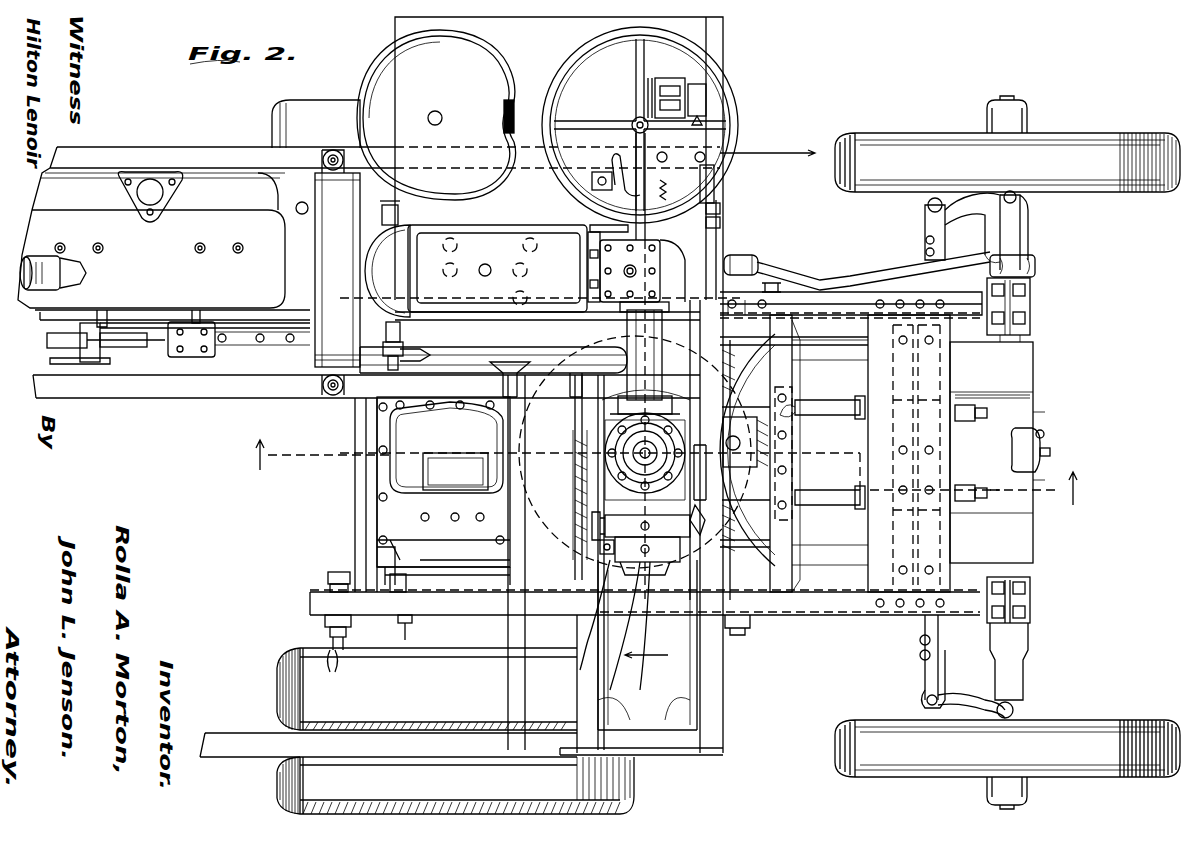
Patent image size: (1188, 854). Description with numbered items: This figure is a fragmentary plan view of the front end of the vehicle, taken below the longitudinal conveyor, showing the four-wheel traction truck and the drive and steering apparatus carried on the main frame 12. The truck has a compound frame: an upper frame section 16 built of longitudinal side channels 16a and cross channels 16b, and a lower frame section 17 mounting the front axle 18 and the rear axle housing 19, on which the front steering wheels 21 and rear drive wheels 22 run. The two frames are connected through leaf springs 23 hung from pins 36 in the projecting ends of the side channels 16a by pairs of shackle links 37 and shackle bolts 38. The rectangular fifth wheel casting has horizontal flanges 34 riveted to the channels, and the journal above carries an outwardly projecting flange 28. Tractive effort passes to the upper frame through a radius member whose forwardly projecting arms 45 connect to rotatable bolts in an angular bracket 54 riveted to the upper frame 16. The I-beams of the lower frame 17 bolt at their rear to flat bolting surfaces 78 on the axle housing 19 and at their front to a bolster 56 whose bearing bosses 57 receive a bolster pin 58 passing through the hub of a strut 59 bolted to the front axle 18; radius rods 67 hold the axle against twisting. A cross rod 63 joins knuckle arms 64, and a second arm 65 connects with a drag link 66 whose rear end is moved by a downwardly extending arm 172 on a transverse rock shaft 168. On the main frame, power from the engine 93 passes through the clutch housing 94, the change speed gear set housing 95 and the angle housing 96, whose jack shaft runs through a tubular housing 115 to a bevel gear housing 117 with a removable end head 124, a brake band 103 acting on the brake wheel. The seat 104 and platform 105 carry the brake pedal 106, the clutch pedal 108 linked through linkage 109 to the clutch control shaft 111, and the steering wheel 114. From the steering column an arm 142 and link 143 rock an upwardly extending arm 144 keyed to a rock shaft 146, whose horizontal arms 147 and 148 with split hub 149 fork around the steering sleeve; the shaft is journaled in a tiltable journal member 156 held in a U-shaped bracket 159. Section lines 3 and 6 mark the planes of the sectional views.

The section line 3- 3 is at (663, 472).
The section line 6- 6 is at (720, 404).
The main frame 12 is at (143, 400).
The upper frame section 16 is at (300, 593).
The side channels 16a is at (812, 640).
The cross channels 16b is at (360, 490).
The lower frame section 17 is at (382, 551).
The front axle 18 is at (1020, 279).
The rear axle housing 19 is at (447, 640).
The front wheels 21 is at (1153, 190).
The rear wheels 22 is at (300, 727).
The leaf springs 23 is at (797, 292).
The flange 28 is at (743, 387).
The horizontal flanges 34 is at (742, 627).
The pins or bolts 36 is at (333, 643).
The shackle links 37 is at (336, 580).
The shackle bolts 38 is at (325, 647).
The forwardly projecting arms 45 is at (837, 413).
The angular bracket 54 is at (845, 487).
The front bolster 56 is at (1024, 400).
The bearing bosses 57 is at (1037, 432).
The bolster pin 58 is at (970, 465).
The strut 59 is at (1012, 333).
The cross rod 63 is at (930, 633).
The arms 64 is at (973, 690).
The second arm 65 is at (972, 240).
The drag link 66 is at (895, 262).
The radius rods 67 is at (832, 343).
The flat bolting surfaces 78 is at (503, 517).
The engine 93 is at (205, 208).
The clutch housing 94 is at (322, 184).
The transmission housing 95 is at (500, 232).
The angle housing 96 is at (688, 236).
The brake band 103 is at (722, 206).
The seat 104 is at (432, 40).
The platform 105 is at (725, 22).
The brake pedal 106 is at (592, 190).
The clutch pedal 108 is at (690, 63).
The linkage 109 is at (478, 362).
The control shaft 111 is at (398, 343).
The steering wheel 114 is at (588, 56).
The tubular housing 115 is at (625, 345).
The bevel gear housing 117 is at (607, 418).
The removable end head 124 is at (603, 456).
The arm 142 is at (706, 100).
The link 143 is at (702, 243).
The upwardly extending arm 144 is at (737, 548).
The rock shaft 146 is at (593, 523).
The horizontal arm 147 is at (692, 468).
The second horizontal arm 148 is at (606, 480).
The split hub 149 is at (598, 538).
The journal member 156 is at (585, 632).
The U-shaped bracket 159 is at (582, 660).
The rock shaft 168 is at (745, 268).
The arm 172 is at (760, 240).